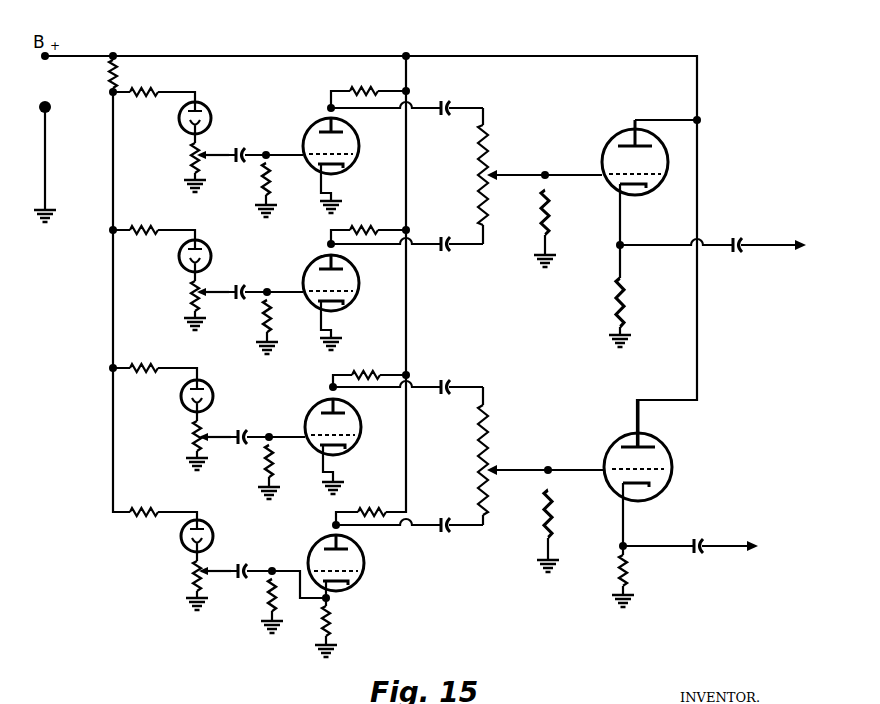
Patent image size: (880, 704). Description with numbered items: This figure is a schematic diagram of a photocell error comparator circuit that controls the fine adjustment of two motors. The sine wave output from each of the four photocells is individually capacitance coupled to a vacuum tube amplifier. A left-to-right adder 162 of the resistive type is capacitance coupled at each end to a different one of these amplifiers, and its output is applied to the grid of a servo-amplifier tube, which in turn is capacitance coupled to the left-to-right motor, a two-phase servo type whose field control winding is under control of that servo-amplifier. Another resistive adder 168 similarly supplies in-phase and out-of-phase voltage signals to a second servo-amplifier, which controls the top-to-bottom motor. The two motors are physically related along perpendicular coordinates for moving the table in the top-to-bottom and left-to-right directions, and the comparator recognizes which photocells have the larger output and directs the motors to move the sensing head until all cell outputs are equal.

The left-to-right adder 162 is at (489, 120).
The resistive adder 168 is at (489, 399).